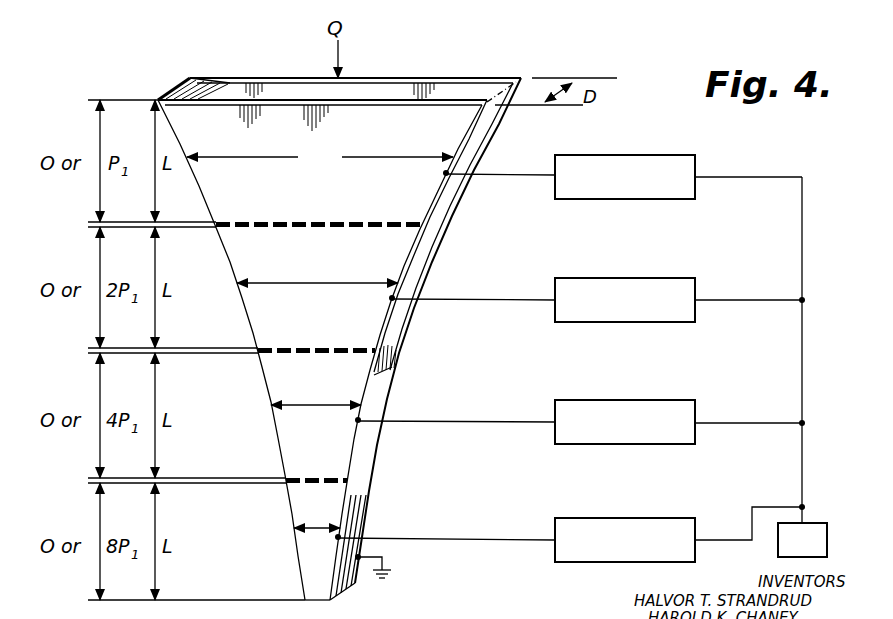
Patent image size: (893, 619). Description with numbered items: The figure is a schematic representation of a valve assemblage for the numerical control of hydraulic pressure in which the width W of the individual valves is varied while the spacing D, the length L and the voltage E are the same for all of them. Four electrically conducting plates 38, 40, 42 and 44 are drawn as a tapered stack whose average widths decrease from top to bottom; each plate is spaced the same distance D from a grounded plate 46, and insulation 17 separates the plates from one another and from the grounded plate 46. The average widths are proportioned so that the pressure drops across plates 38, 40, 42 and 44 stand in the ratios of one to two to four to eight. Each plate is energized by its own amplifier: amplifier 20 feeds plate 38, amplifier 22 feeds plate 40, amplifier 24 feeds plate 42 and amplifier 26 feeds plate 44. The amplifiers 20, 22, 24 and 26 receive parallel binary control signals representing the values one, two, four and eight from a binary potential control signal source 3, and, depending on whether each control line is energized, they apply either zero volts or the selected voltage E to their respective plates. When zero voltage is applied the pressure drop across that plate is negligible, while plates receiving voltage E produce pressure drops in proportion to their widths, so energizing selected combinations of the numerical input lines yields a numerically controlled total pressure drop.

The insulation 17 is at (164, 96).
The grounded plate 46 is at (430, 79).
The electrically conducting plate 38 is at (396, 210).
The electrically conducting plate 40 is at (364, 334).
The electrically conducting plate 42 is at (342, 467).
The electrically conducting plate 44 is at (331, 567).
The amplifier 20 is at (633, 155).
The amplifier 22 is at (633, 278).
The amplifier 24 is at (633, 400).
The amplifier 26 is at (633, 518).
The binary potential control signal source 3 is at (802, 540).